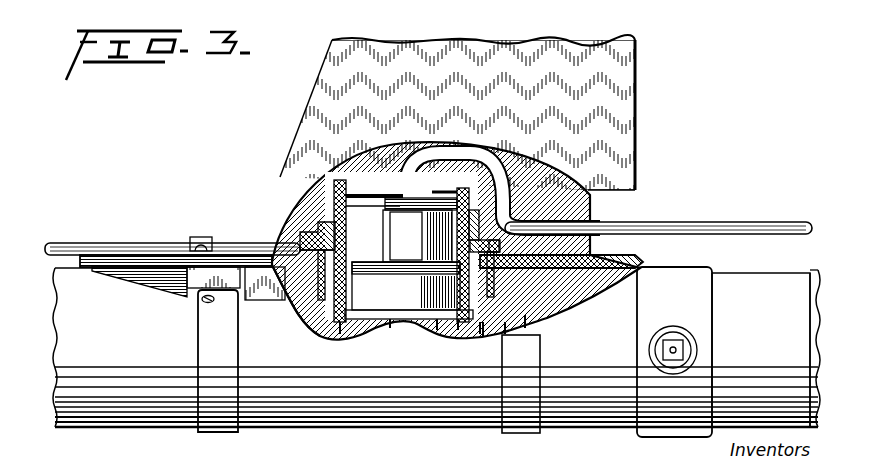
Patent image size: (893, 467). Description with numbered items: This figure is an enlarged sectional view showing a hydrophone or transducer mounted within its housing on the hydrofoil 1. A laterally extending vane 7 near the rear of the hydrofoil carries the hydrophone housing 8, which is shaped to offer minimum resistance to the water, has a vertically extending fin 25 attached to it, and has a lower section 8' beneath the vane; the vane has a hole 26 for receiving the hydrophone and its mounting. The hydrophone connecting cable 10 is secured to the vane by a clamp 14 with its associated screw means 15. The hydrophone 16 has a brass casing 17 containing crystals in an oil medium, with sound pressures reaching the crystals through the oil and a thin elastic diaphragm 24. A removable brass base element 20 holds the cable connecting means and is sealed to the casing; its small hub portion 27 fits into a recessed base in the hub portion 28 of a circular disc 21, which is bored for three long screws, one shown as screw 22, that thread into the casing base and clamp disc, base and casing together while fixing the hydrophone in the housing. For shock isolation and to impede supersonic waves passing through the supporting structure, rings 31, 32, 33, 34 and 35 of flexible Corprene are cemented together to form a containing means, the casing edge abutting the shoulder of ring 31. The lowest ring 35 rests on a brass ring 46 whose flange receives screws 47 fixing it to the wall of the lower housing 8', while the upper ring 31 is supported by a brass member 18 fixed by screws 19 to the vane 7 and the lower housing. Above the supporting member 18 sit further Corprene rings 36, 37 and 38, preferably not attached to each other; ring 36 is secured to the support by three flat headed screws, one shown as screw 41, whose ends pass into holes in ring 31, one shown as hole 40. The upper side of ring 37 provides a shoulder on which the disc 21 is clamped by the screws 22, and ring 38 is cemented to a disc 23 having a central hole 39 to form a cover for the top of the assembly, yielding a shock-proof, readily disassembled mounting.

The hydrofoil 1 is at (430, 435).
The vane 7 is at (643, 262).
The hydrophone housing 8 is at (456, 238).
The lower housing section 8' is at (295, 308).
The hydrophone connecting cable 10 is at (70, 247).
The clamp 14 is at (201, 236).
The screw means 15 is at (190, 240).
The hydrophone 16 is at (383, 313).
The casing 17 is at (406, 286).
The supporting member 18 is at (492, 252).
The screws 19 is at (330, 240).
The base element 20 is at (417, 236).
The circular disc 21 is at (352, 194).
The long screw 22 is at (513, 210).
The disc 23 is at (469, 180).
The elastic diaphragm 24 is at (397, 316).
The vertically extending fin 25 is at (637, 80).
The hole 26 is at (532, 262).
The hub portion 27 is at (370, 190).
The hub portion 28 is at (440, 170).
The Corprene ring 31 is at (500, 258).
The Corprene ring 32 is at (525, 328).
The Corprene ring 33 is at (505, 334).
The Corprene ring 34 is at (483, 336).
The Corprene ring 35 is at (458, 322).
The ring 36 is at (470, 218).
The ring 37 is at (350, 213).
The ring 38 is at (350, 196).
The hole 39 is at (397, 178).
The hole 40 is at (335, 238).
The flat headed screw 41 is at (340, 228).
The ring 46 is at (437, 322).
The screws 47 is at (348, 331).